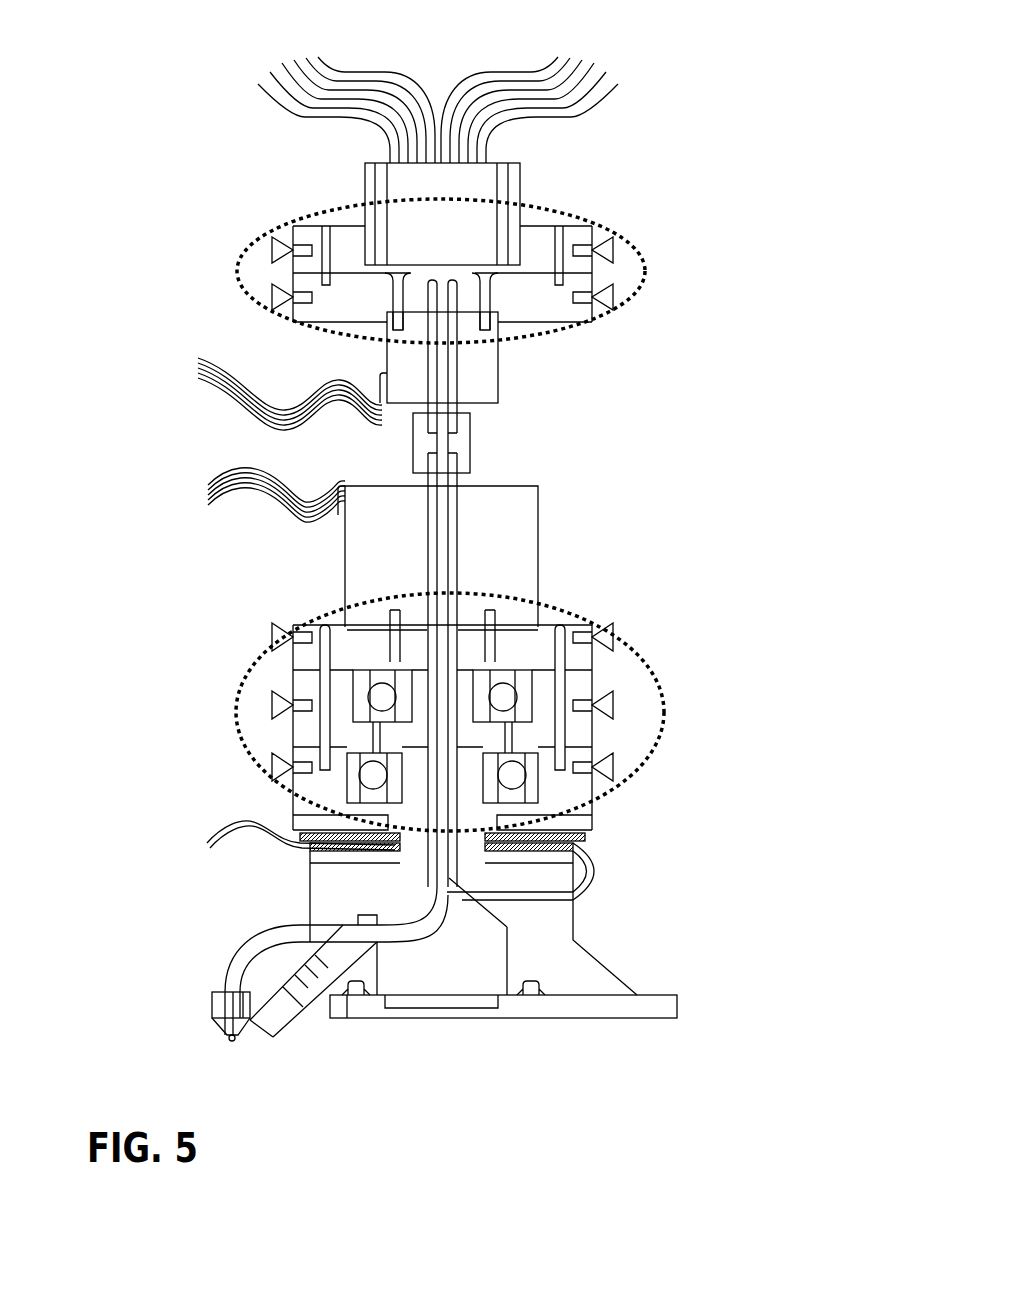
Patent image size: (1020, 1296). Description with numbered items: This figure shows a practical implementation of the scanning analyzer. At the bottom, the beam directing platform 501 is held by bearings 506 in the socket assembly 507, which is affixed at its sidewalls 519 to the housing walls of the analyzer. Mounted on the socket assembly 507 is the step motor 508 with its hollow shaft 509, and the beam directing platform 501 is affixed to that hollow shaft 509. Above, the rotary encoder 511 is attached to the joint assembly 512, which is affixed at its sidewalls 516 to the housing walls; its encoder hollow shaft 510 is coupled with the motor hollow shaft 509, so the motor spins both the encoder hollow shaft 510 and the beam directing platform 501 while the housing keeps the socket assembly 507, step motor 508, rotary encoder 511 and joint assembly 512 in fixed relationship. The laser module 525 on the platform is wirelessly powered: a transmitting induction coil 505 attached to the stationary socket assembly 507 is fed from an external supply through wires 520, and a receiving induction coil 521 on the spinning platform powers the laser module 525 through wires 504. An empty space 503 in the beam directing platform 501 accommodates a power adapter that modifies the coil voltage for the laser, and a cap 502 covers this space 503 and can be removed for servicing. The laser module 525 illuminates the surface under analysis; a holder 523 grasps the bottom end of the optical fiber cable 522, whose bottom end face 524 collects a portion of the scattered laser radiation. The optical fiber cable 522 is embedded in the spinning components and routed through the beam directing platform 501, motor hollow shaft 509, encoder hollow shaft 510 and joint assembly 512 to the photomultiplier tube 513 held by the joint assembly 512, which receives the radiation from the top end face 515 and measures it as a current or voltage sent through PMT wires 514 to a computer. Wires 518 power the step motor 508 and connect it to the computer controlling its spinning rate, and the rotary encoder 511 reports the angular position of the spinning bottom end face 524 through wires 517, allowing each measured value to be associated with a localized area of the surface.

The beam directing platform 501 is at (422, 760).
The cap 502 is at (553, 1000).
The empty space 503 is at (493, 975).
The wires 504 is at (604, 867).
The transmitting induction coil 505 is at (546, 777).
The bearings 506 is at (537, 690).
The socket assembly 507 is at (623, 647).
The step motor 508 is at (544, 560).
The hollow shaft 509 is at (470, 528).
The encoder hollow shaft 510 is at (468, 388).
The rotary encoder 511 is at (506, 361).
The joint assembly 512 is at (638, 251).
The photomultiplier tube 513 is at (528, 192).
The PMT wires 514 is at (287, 113).
The top end face 515 is at (433, 270).
The sidewalls 516 is at (290, 270).
The wires 517 is at (196, 357).
The wires 518 is at (226, 478).
The sidewalls 519 is at (288, 681).
The wires 520 is at (216, 838).
The receiving induction coil 521 is at (303, 847).
The optical fiber cable 522 is at (247, 942).
The holder 523 is at (210, 1005).
The bottom end face 524 is at (234, 1046).
The laser module 525 is at (400, 1090).